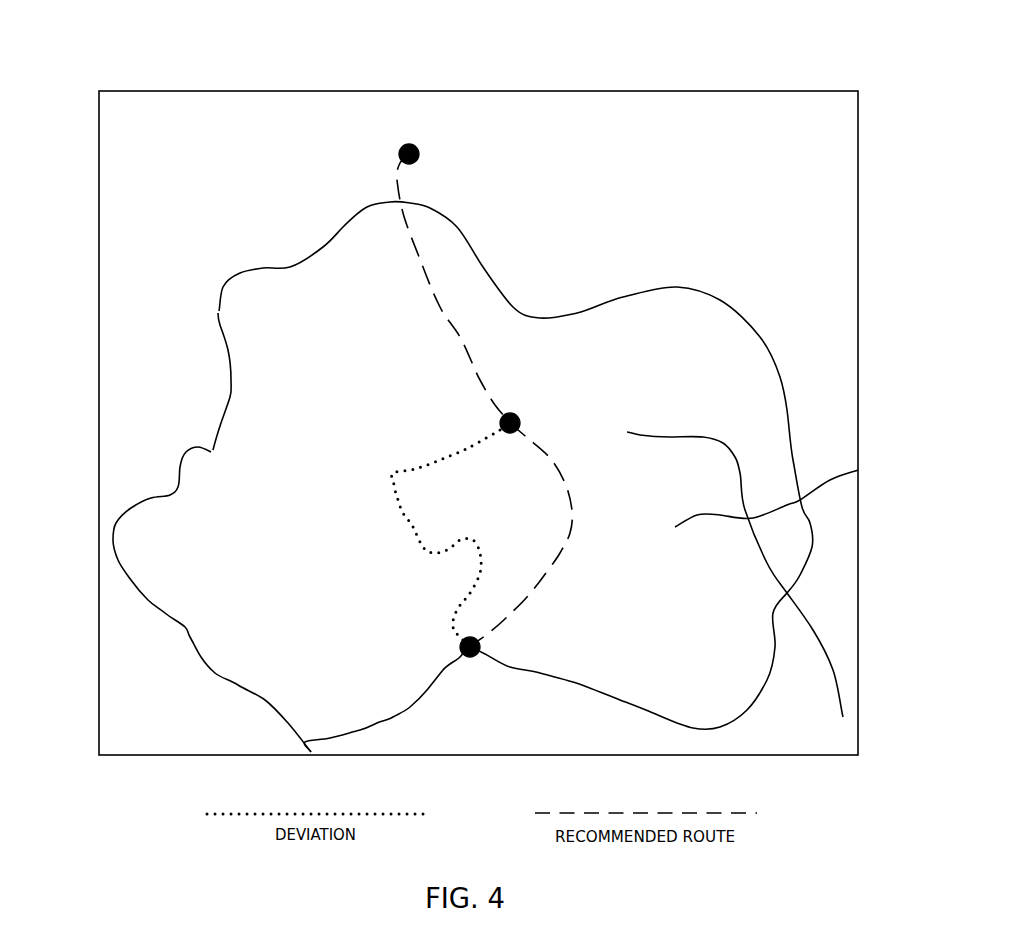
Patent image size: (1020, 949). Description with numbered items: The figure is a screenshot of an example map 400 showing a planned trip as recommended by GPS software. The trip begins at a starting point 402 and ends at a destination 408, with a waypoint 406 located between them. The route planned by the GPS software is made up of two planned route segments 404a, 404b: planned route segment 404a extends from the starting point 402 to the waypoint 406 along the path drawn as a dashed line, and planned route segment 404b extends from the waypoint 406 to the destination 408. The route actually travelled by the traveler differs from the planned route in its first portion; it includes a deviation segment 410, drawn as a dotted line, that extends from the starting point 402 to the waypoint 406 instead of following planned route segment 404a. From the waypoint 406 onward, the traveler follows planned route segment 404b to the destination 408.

The map 400 is at (727, 50).
The starting point 402 is at (460, 647).
The planned route segment 404a is at (540, 582).
The planned route segment 404b is at (460, 338).
The waypoint 406 is at (520, 413).
The destination 408 is at (607, 153).
The deviation segment 410 is at (403, 513).